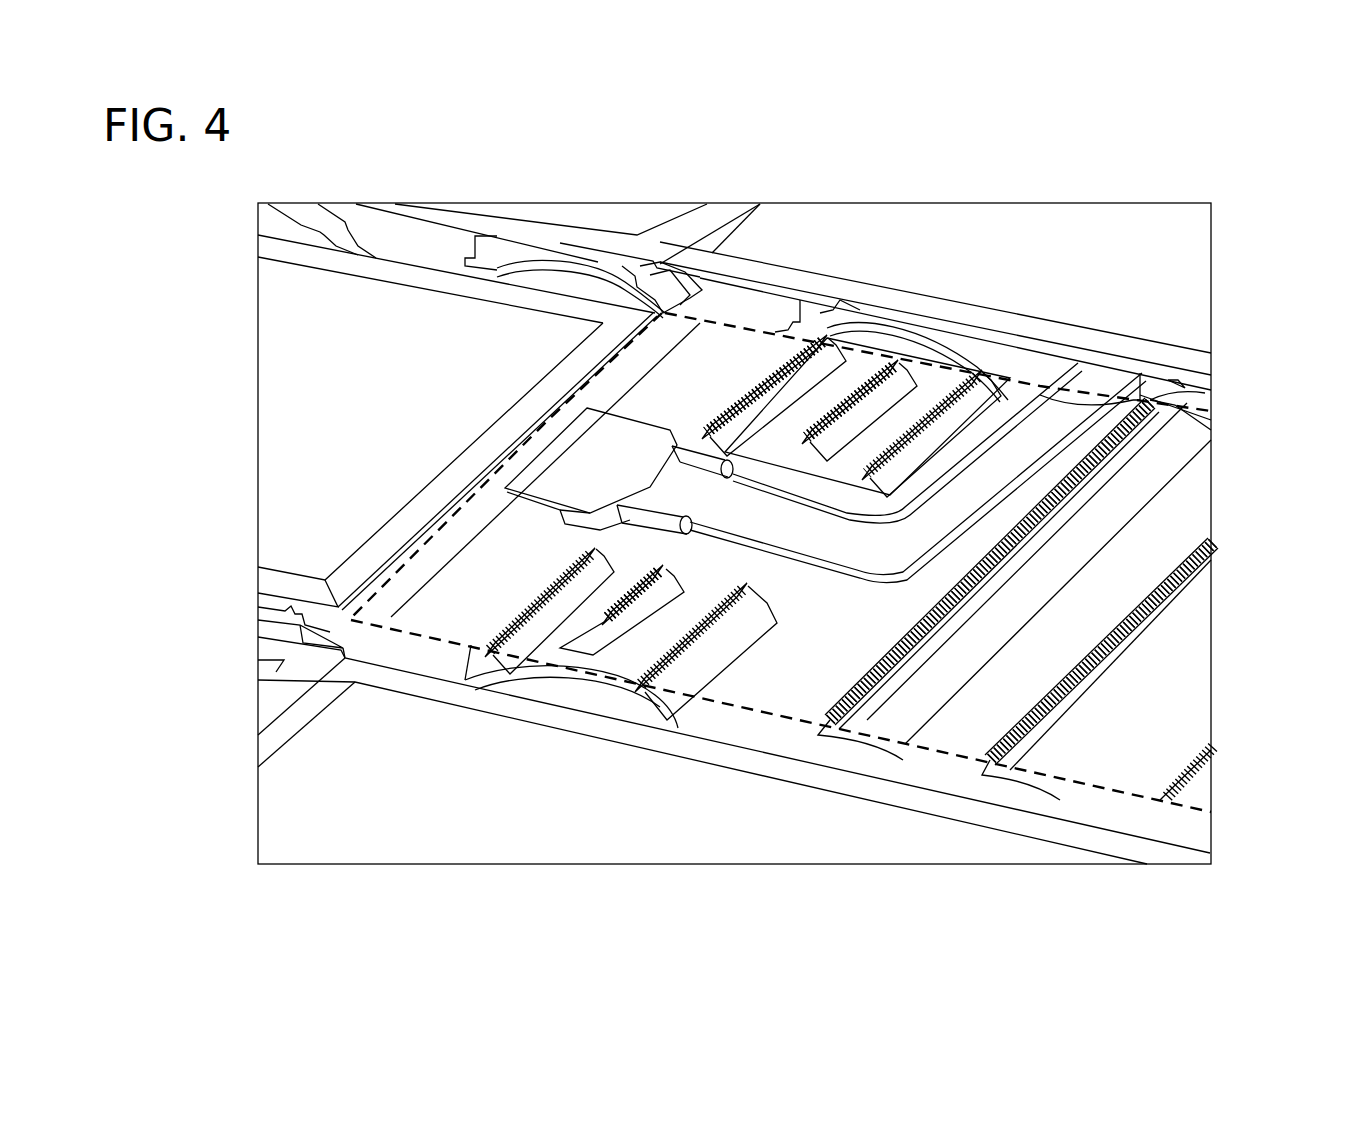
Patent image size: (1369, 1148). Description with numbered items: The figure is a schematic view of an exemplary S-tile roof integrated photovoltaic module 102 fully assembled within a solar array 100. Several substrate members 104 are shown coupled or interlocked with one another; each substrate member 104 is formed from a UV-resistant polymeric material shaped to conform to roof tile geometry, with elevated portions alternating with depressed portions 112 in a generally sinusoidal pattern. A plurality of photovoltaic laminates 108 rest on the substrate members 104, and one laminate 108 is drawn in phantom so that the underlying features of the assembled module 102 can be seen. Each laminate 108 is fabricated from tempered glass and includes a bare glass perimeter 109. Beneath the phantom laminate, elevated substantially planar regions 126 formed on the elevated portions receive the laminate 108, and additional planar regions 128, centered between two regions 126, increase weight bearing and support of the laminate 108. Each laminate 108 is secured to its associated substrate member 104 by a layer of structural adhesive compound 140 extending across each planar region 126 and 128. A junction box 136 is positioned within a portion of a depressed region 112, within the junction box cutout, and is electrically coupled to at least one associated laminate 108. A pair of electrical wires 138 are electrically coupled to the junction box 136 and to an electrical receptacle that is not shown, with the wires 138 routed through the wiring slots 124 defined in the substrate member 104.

The solar array 100 is at (1210, 150).
The photovoltaic module 102 is at (1236, 283).
The substrate member 104 is at (555, 283).
The photovoltaic laminate 108 is at (402, 387).
The bare glass perimeter 109 is at (1203, 365).
The depressed portion 112 is at (470, 625).
The wiring slots 124 is at (1070, 418).
The elevated substantially planar regions 126 is at (818, 345).
The additional elevated substantially planar regions 128 is at (887, 370).
The junction box 136 is at (623, 459).
The electrical wires 138 is at (893, 600).
The structural adhesive compound 140 is at (750, 400).